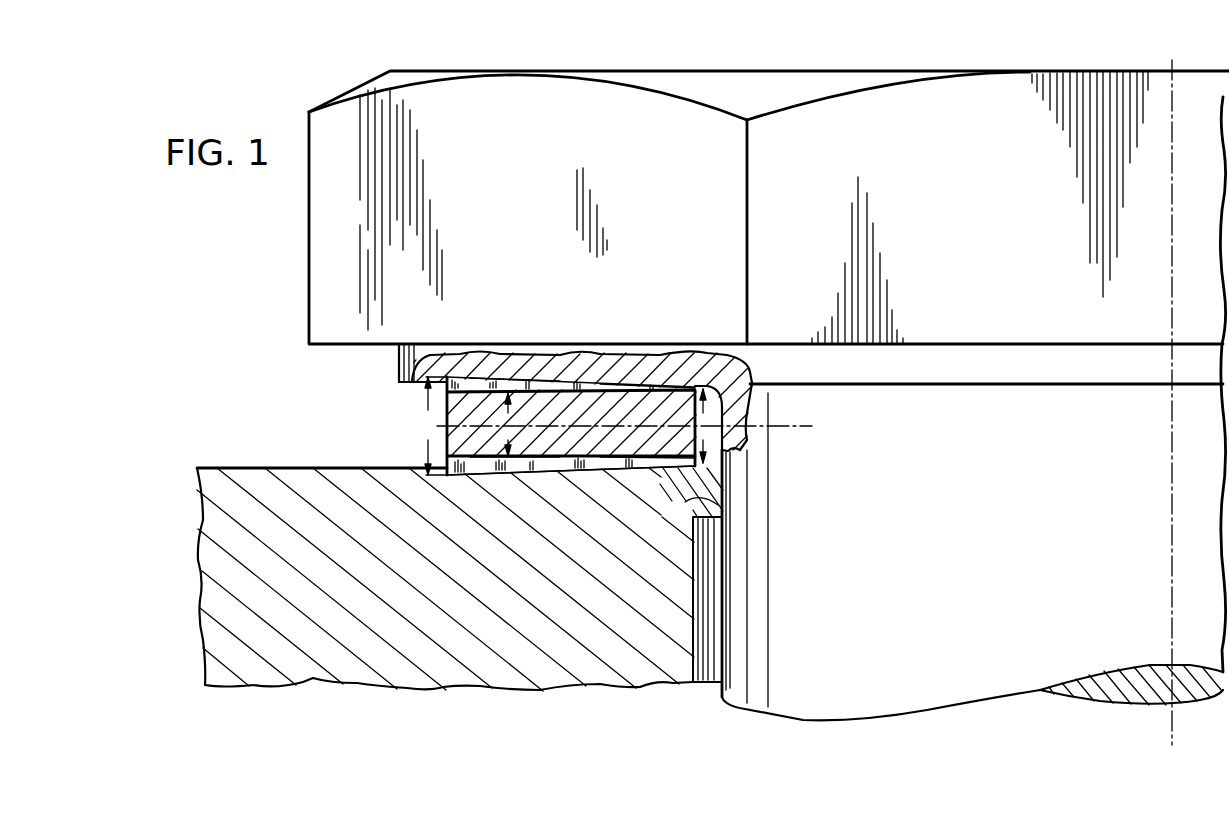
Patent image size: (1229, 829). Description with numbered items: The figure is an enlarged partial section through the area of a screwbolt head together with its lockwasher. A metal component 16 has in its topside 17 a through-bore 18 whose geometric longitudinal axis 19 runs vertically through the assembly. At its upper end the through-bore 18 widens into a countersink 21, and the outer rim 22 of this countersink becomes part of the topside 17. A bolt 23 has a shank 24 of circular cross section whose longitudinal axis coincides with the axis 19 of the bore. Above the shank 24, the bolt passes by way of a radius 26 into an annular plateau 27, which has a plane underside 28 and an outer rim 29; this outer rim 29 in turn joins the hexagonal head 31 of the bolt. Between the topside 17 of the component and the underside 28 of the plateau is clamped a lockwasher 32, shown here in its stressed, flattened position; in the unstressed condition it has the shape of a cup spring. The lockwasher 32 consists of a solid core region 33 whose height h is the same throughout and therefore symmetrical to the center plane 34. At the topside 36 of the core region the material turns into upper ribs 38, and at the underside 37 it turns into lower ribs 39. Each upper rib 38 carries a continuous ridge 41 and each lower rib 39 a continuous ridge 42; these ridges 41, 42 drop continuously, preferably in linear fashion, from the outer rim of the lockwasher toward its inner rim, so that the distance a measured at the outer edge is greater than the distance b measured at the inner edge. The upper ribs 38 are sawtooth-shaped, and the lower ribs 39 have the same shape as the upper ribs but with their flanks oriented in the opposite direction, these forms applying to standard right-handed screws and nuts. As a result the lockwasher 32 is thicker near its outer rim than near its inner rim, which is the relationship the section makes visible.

The metal component 16 is at (468, 652).
The topside 17 is at (252, 468).
The through-bore 18 is at (712, 657).
The geometric longitudinal axis 19 is at (1172, 488).
The countersink 21 is at (727, 493).
The outer rim 22 is at (722, 480).
The bolt 23 is at (297, 252).
The shank 24 is at (1075, 658).
The radius 26 is at (722, 412).
The annular plateau 27 is at (915, 367).
The underside 28 is at (413, 382).
The outer rim 29 is at (400, 362).
The head 31 is at (837, 105).
The lockwasher 32 is at (415, 438).
The core region 33 is at (598, 436).
The center plane 34 is at (773, 438).
The topside 36 is at (608, 388).
The underside 37 is at (594, 470).
The upper ribs 38 is at (478, 378).
The lower ribs 39 is at (476, 473).
The ridge 41 is at (539, 380).
The ridge 42 is at (528, 470).